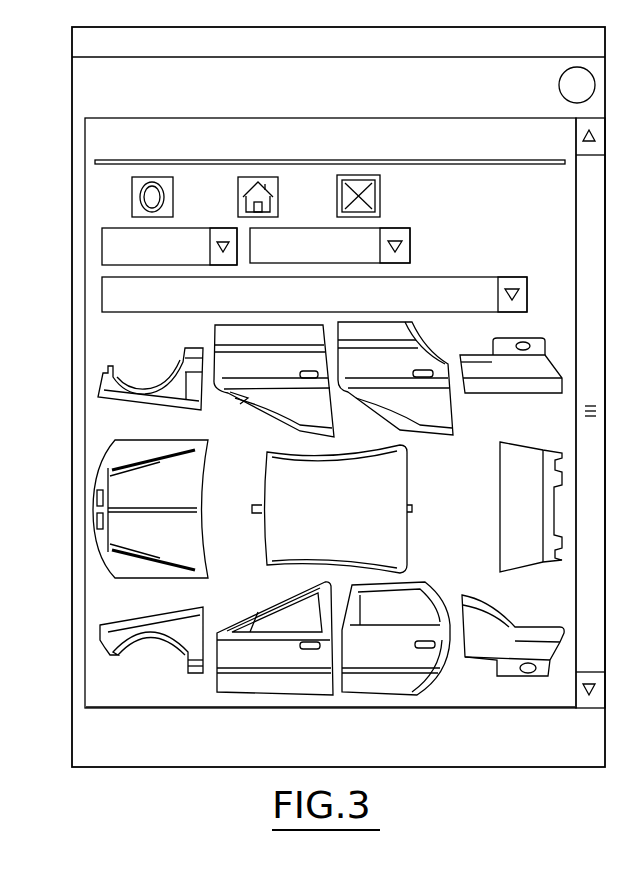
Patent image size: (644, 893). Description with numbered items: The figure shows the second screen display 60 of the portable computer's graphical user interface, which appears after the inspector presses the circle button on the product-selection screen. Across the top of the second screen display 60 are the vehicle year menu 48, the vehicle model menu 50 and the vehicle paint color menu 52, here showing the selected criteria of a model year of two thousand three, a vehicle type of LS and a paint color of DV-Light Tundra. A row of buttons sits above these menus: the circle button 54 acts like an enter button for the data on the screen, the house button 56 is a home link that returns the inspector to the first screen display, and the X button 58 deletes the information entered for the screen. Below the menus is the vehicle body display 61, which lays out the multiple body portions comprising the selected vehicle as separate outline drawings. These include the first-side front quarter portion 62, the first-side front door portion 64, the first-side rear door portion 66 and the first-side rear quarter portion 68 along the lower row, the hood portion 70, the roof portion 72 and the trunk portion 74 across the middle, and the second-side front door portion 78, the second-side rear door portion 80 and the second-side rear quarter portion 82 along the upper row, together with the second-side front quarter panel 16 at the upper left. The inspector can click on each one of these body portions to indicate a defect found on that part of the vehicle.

The second screen display 60 is at (514, 19).
The vehicle year menu 48 is at (102, 247).
The vehicle model menu 50 is at (400, 228).
The vehicle paint color menu 52 is at (102, 295).
The icon 54 is at (174, 200).
The house button 56 is at (280, 201).
The X button 58 is at (381, 190).
The vehicle body display 61 is at (548, 316).
The rear fender 16 is at (135, 400).
The second-side front door portion 78 is at (215, 335).
The second-side rear door portion 80 is at (405, 360).
The second-side rear quarter portion 82 is at (530, 372).
The hood portion 70 is at (200, 476).
The roof portion 72 is at (410, 478).
The trunk portion 74 is at (500, 484).
The first-side front quarter portion 62 is at (123, 618).
The first-side front door portion 64 is at (258, 614).
The first-side rear door portion 66 is at (415, 660).
The first-side rear quarter portion 68 is at (525, 627).